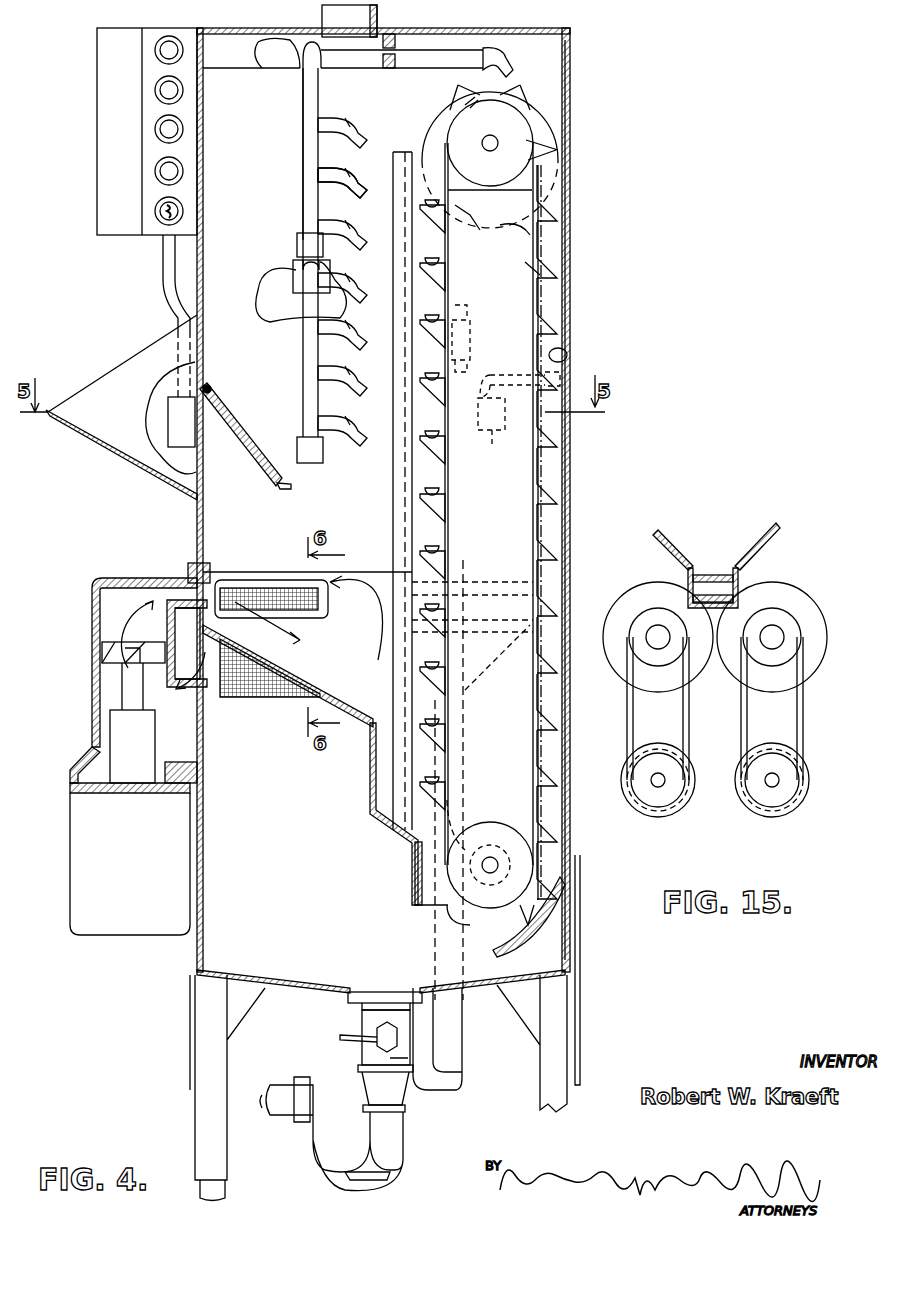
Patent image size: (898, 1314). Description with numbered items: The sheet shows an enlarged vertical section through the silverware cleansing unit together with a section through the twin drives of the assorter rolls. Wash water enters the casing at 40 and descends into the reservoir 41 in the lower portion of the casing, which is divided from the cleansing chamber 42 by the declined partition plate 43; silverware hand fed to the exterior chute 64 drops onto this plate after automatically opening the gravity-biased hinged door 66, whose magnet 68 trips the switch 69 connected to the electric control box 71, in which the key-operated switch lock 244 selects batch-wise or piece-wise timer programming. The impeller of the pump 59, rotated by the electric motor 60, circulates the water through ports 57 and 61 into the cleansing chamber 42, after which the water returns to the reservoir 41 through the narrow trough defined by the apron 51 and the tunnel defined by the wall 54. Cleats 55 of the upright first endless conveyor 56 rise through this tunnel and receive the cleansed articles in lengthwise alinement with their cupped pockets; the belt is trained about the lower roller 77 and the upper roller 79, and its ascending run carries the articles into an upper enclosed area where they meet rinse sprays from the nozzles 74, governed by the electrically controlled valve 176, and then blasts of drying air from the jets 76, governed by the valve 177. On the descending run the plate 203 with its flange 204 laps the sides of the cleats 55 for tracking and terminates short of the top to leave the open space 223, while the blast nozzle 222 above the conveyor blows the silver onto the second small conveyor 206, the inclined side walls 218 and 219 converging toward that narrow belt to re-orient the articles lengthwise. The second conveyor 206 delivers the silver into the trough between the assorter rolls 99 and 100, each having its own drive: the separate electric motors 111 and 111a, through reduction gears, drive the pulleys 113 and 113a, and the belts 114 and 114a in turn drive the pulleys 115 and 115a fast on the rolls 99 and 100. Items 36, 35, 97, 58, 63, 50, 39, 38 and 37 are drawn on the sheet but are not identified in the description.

In FIG. 4, the electric control box 71 is at (97, 180).
In FIG. 4, the switch lock 244 is at (148, 237).
In FIG. 4, the inlet box 36 is at (357, 27).
In FIG. 4, the electrically controlled valve 177 is at (293, 72).
In FIG. 4, the supply pipe 35 is at (497, 32).
In FIG. 4, the blast nozzle 222 is at (508, 60).
In FIG. 4, the nozzles 74 is at (357, 380).
In FIG. 4, the jets 76 is at (360, 150).
In FIG. 4, the electrically controlled valve 176 is at (287, 268).
In FIG. 4, the exterior chute 64 is at (116, 455).
In FIG. 4, the switch 69 is at (167, 423).
In FIG. 4, the door 66 is at (255, 447).
In FIG. 4, the magnet 68 is at (237, 420).
In FIG. 4, the upper roller 79 is at (520, 143).
In FIG. 4, the lower roller 77 is at (497, 842).
In FIG. 4, the guide 97 is at (442, 815).
In FIG. 4, the first endless conveyor 56 is at (536, 296).
In FIG. 4, the flange 204 is at (548, 298).
In FIG. 4, the plate 203 is at (560, 355).
In FIG. 4, the open space 223 is at (568, 194).
In FIG. 4, the cleats 55 is at (500, 100).
In FIG. 4, the wash water inlet 40 is at (506, 388).
In FIG. 4, the pump housing 58 is at (100, 583).
In FIG. 4, the port 61 is at (197, 588).
In FIG. 4, the impeller 63 is at (147, 612).
In FIG. 4, the pump 59 is at (103, 667).
In FIG. 4, the port 57 is at (200, 738).
In FIG. 4, the electric motor 60 is at (137, 876).
In FIG. 4, the cleansing chamber 42 is at (287, 661).
In FIG. 4, the filter 50 is at (260, 688).
In FIG. 4, the declined partition plate 43 is at (327, 698).
In FIG. 4, the apron 51 is at (370, 784).
In FIG. 4, the wall 54 is at (416, 885).
In FIG. 4, the reservoir 41 is at (314, 896).
In FIG. 4, the drain pipe 39 is at (453, 1018).
In FIG. 4, the drain fitting 38 is at (360, 1032).
In FIG. 4, the trap 37 is at (393, 1126).
In FIG. 15, the second small conveyor 206 is at (707, 570).
In FIG. 15, the inclined side wall 218 is at (658, 534).
In FIG. 15, the inclined side wall 219 is at (780, 528).
In FIG. 15, the assorter roll 99 is at (632, 597).
In FIG. 15, the assorter roll 100 is at (817, 572).
In FIG. 15, the pulley 115 is at (641, 622).
In FIG. 15, the pulley 115a is at (782, 622).
In FIG. 15, the belt 114 is at (627, 709).
In FIG. 15, the belt 114a is at (798, 712).
In FIG. 15, the electric motor 111 is at (617, 778).
In FIG. 15, the electric motor 111a is at (807, 770).
In FIG. 15, the pulley 113 is at (647, 808).
In FIG. 15, the pulley 113a is at (772, 808).